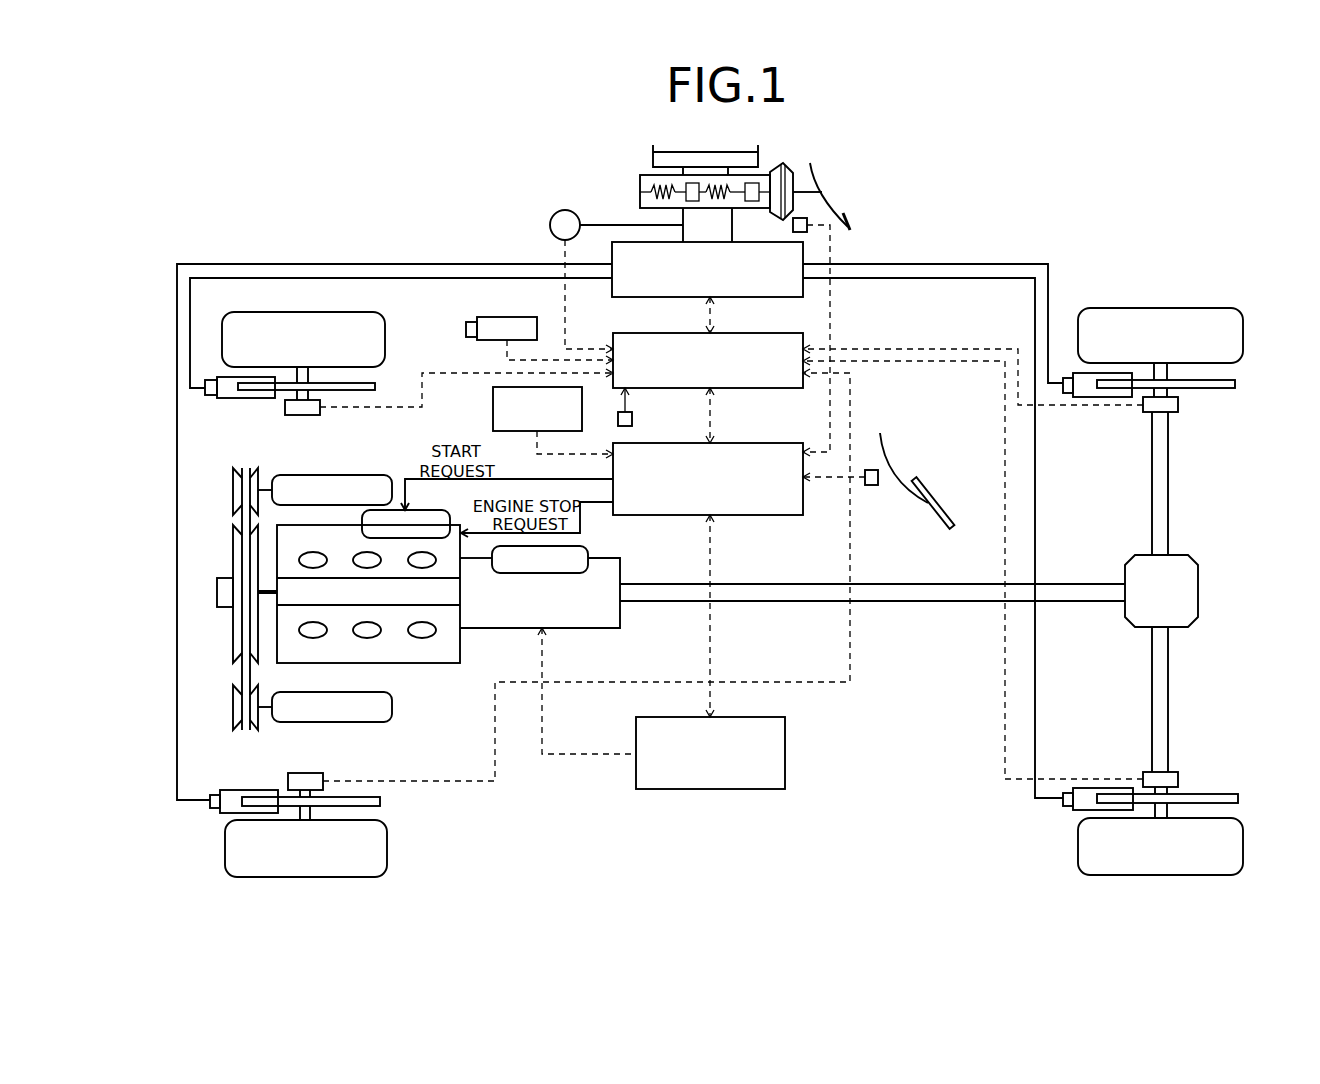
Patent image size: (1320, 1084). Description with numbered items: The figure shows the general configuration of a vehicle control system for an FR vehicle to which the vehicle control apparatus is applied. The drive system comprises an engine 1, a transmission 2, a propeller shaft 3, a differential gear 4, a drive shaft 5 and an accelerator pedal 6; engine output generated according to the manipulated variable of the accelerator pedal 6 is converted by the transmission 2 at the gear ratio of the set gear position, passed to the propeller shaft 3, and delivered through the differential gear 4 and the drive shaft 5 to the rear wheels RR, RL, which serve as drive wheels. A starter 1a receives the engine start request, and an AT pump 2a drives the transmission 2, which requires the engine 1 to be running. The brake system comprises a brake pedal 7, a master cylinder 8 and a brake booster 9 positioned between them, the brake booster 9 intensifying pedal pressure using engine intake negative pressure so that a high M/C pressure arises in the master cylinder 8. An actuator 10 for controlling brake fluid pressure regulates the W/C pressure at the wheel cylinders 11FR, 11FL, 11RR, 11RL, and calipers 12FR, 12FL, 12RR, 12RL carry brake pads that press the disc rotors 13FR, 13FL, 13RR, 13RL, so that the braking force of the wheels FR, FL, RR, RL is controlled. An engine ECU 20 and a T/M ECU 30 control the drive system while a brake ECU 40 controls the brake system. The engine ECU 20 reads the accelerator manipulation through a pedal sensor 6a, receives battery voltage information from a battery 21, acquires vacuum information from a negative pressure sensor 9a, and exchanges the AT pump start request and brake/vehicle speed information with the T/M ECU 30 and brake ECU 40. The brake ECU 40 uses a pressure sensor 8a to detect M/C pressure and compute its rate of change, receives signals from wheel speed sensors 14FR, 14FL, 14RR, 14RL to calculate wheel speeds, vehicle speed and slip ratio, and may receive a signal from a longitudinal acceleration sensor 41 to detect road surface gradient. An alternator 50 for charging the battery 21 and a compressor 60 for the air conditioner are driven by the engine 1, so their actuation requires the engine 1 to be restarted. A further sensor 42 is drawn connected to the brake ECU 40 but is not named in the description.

The engine 1 is at (420, 665).
The starter 1a is at (415, 510).
The transmission 2 is at (602, 628).
The AT pump 2a is at (588, 548).
The propeller shaft 3 is at (916, 601).
The differential gear 4 is at (1198, 588).
The drive shaft 5 is at (1168, 518).
The accelerator pedal 6 is at (920, 480).
The pedal sensor 6a is at (872, 485).
The brake pedal 7 is at (849, 215).
The master cylinder 8 is at (640, 178).
The pressure sensor 8a is at (550, 225).
The brake booster 9 is at (788, 165).
The negative pressure sensor 9a is at (793, 225).
The actuator for controlling brake fluid pressure 10 is at (803, 290).
The wheel cylinder 11FR is at (207, 400).
The wheel cylinder 11FL is at (213, 795).
The wheel cylinder 11RR is at (1063, 397).
The wheel cylinder 11RL is at (1063, 790).
The caliper 12FR is at (215, 377).
The caliper 12FL is at (228, 808).
The caliper 12RR is at (1113, 397).
The caliper 12RL is at (1112, 788).
The disc rotor 13FR is at (375, 387).
The disc rotor 13FL is at (380, 800).
The disc rotor 13RR is at (1235, 384).
The disc rotor 13RL is at (1238, 797).
The wheel speed sensor 14FR is at (297, 415).
The wheel speed sensor 14FL is at (305, 773).
The wheel speed sensor 14RR is at (1178, 403).
The wheel speed sensor 14RL is at (1178, 780).
The engine ECU 20 is at (760, 443).
The battery 21 is at (493, 414).
The T/M ECU 30 is at (785, 755).
The brake ECU 40 is at (760, 333).
The longitudinal acceleration sensor 41 is at (632, 418).
The acceleration (G) sensor 42 is at (502, 317).
The alternator 50 is at (336, 473).
The compressor 60 is at (392, 707).
The front-right wheel FR is at (348, 311).
The front-left wheel FL is at (387, 850).
The rear-right wheel RR is at (1205, 308).
The rear-left wheel RL is at (1243, 850).